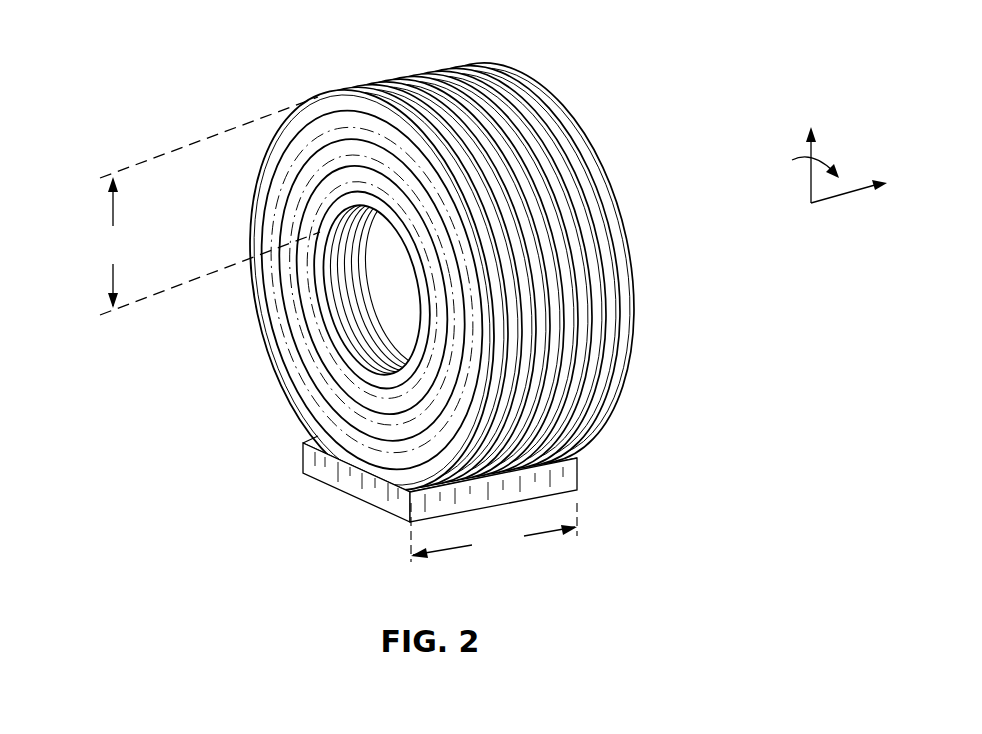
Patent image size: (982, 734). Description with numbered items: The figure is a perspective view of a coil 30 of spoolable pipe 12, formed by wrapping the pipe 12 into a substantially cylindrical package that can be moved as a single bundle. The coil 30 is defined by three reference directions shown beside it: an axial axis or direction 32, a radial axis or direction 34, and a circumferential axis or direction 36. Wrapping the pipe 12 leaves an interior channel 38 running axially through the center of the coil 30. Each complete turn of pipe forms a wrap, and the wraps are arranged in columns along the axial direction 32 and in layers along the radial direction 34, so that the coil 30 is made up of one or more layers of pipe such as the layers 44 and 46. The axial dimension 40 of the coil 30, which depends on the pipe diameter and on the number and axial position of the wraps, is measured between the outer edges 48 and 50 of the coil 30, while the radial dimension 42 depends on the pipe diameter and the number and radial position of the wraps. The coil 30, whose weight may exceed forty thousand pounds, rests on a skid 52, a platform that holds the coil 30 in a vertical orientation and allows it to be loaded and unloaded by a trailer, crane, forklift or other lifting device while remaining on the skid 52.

The spoolable pipe 12 is at (433, 264).
The coil 30 is at (469, 264).
The axial axis or direction 32 is at (838, 200).
The radial axis or direction 34 is at (810, 182).
The circumferential axis or direction 36 is at (822, 154).
The interior channel 38 is at (370, 332).
The axial dimension 40 is at (494, 532).
The radial dimension 42 is at (208, 206).
The layer 44 is at (268, 163).
The layer 46 is at (310, 267).
The outer edge 48 is at (318, 96).
The outer edge 50 is at (494, 80).
The skid 52 is at (572, 472).